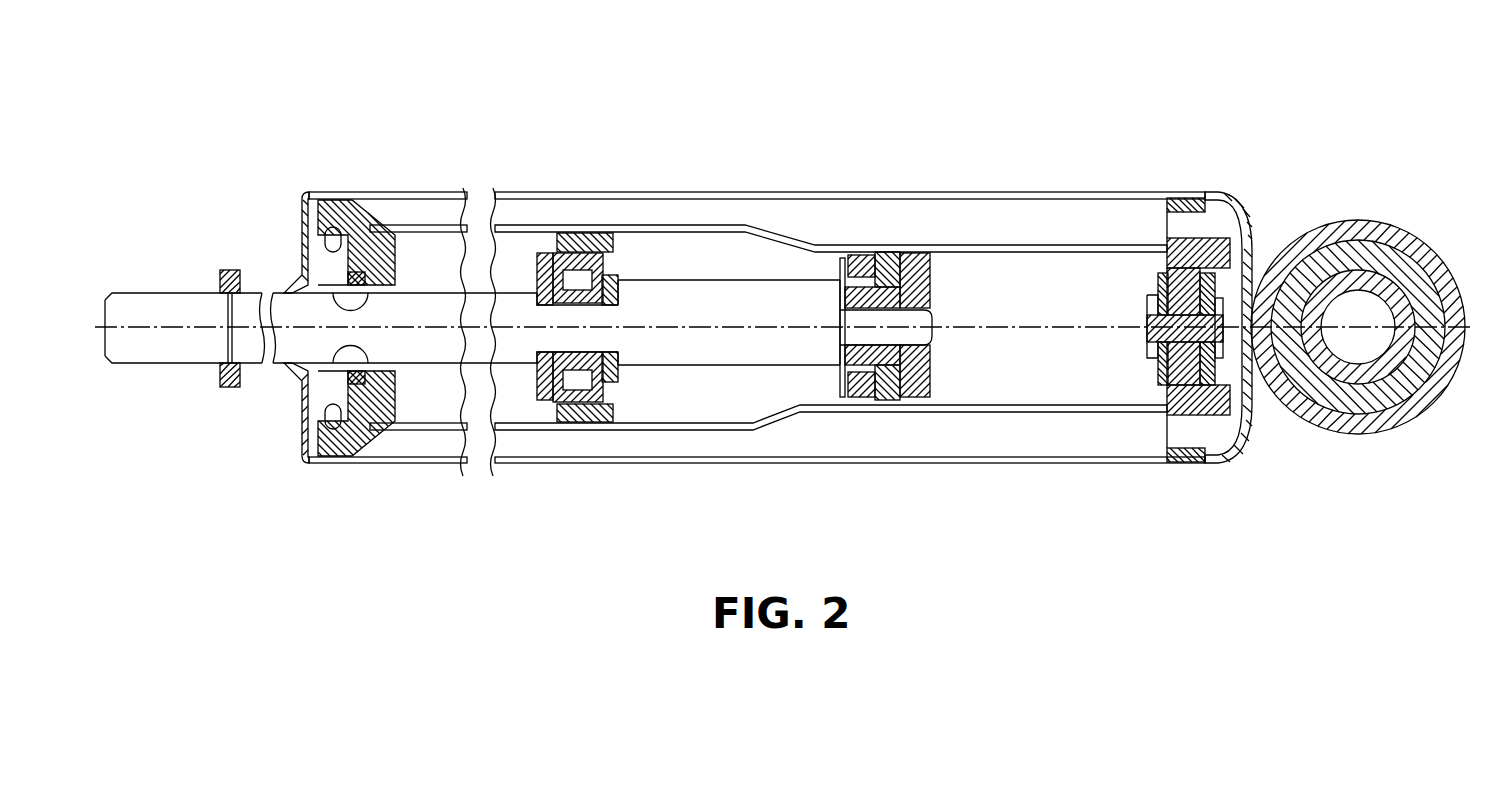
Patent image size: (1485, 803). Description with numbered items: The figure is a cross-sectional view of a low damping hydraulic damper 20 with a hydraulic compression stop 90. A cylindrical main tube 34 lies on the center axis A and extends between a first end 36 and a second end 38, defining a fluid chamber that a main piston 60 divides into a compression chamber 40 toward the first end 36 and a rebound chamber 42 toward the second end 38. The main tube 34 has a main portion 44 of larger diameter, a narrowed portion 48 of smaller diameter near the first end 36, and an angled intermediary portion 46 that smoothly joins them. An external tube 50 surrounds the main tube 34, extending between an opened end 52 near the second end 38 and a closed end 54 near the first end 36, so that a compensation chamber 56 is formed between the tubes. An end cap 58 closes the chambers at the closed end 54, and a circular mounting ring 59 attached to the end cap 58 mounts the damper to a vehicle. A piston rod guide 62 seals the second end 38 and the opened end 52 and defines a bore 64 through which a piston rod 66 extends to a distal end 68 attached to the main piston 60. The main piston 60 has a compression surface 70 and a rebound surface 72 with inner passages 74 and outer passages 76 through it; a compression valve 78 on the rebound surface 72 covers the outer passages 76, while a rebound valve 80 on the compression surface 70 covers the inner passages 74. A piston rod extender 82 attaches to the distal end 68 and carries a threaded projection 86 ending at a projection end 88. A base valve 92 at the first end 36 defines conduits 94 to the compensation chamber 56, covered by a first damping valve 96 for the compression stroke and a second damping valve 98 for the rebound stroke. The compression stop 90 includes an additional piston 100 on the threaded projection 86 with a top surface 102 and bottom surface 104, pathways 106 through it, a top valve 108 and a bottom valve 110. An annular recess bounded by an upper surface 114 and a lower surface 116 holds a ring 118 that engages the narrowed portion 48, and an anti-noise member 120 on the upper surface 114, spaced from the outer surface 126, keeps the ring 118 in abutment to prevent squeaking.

The low damping hydraulic damper 20 is at (206, 160).
The center axis A is at (151, 325).
The main tube 34 is at (415, 210).
The first end 36 is at (1113, 232).
The second end 38 is at (368, 210).
The compression chamber 40 is at (658, 410).
The rebound chamber 42 is at (496, 193).
The main portion 44 is at (510, 232).
The intermediary portion 46 is at (777, 415).
The narrowed portion 48 is at (662, 192).
The external tube 50 is at (440, 192).
The opened end 52 is at (305, 200).
The closed end 54 is at (1200, 195).
The compensation chamber 56 is at (953, 205).
The end cap 58 is at (1228, 212).
The mounting ring 59 is at (1390, 432).
The main piston 60 is at (568, 240).
The piston rod guide 62 is at (340, 205).
The bore 64 is at (348, 292).
The piston rod 66 is at (178, 300).
The distal end 68 is at (615, 262).
The compression surface 70 is at (621, 400).
The rebound surface 72 is at (536, 262).
The inner passages 74 is at (585, 236).
The outer passages 76 is at (572, 420).
The compression valve 78 is at (558, 233).
The rebound valve 80 is at (598, 412).
The piston rod extender 82 is at (710, 300).
The threaded projection 86 is at (965, 237).
The projection end 88 is at (933, 327).
The hydraulic compression stop 90 is at (914, 402).
The base valve 92 is at (1175, 242).
The conduits 94 is at (1183, 242).
The first damping valve 96 is at (1160, 410).
The second damping valve 98 is at (1212, 395).
The additional piston 100 is at (830, 280).
The top surface 102 is at (833, 297).
The bottom surface 104 is at (930, 388).
The pathways 106 is at (895, 405).
The top valve 108 is at (812, 240).
The bottom valve 110 is at (930, 268).
The upper surface 114 is at (878, 255).
The lower surface 116 is at (898, 257).
The ring 118 is at (893, 398).
The anti-noise member 120 is at (858, 412).
The outer surface 126 is at (860, 262).